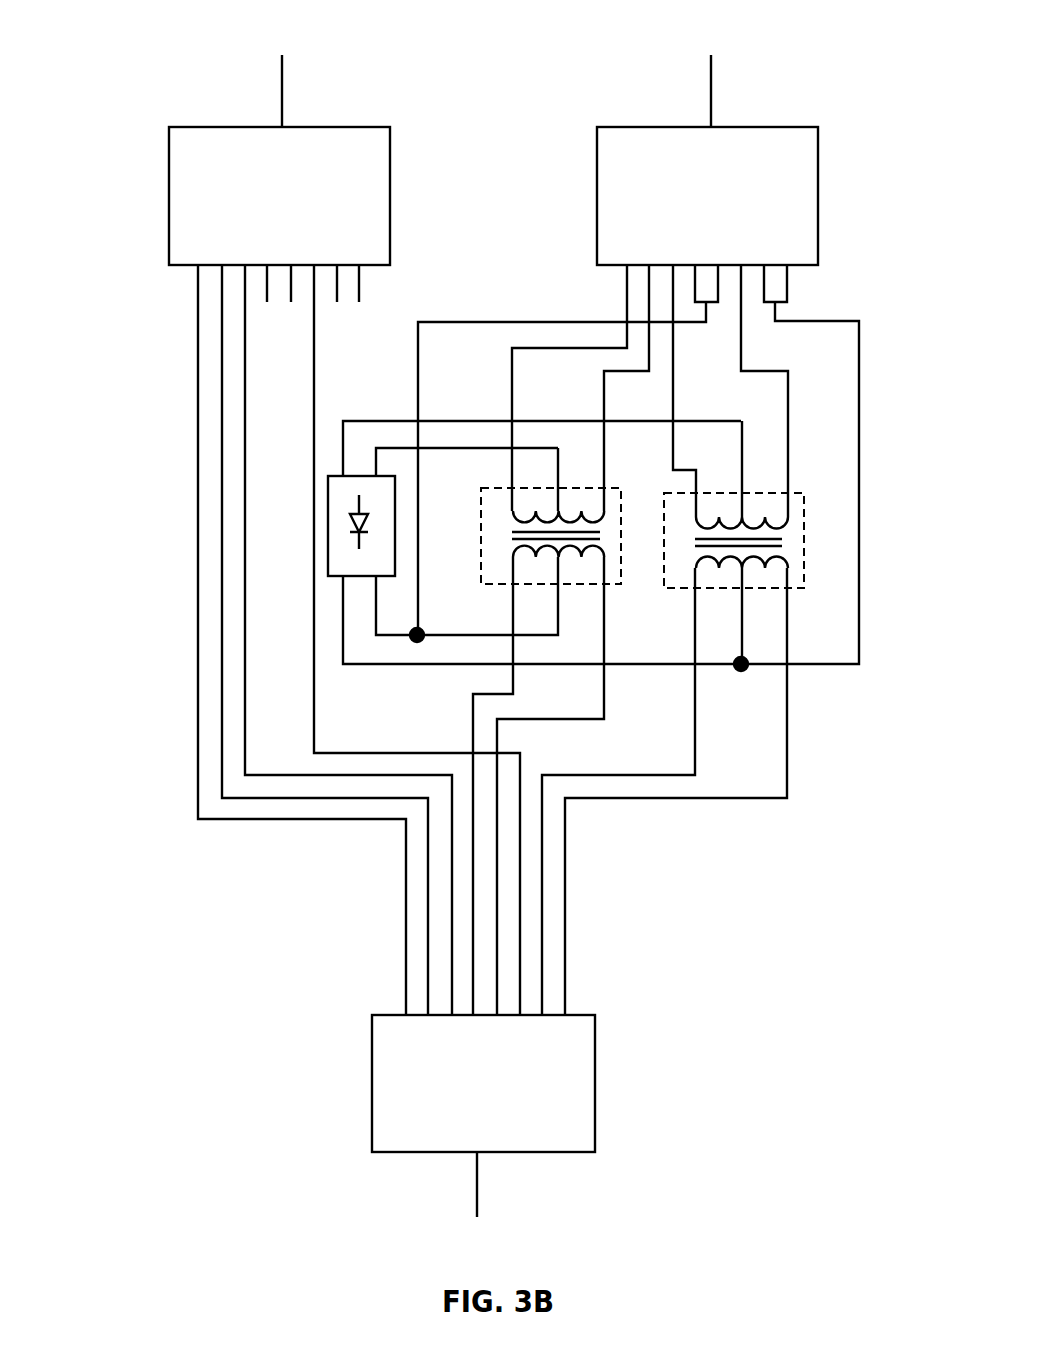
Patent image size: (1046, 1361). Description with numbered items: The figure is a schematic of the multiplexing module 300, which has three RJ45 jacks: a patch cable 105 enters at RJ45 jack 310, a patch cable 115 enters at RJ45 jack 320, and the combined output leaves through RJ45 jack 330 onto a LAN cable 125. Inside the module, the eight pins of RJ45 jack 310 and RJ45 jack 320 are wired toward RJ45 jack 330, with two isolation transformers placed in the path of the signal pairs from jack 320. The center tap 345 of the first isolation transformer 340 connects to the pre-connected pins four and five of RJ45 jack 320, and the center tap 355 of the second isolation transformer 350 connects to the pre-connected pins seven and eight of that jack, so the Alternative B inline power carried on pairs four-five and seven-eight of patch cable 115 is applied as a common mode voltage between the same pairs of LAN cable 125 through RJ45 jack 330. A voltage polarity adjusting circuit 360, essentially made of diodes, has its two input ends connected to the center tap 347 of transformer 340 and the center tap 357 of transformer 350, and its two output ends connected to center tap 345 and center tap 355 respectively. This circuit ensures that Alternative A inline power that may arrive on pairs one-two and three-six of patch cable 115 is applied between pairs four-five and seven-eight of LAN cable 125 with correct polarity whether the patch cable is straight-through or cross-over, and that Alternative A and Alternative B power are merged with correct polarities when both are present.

The patch cable 105 is at (277, 98).
The patch cable 115 is at (705, 103).
The LAN cable 125 is at (470, 1173).
The multiplexing module 300 is at (132, 238).
The RJ45 jack 310 is at (393, 243).
The RJ45 jack 320 is at (592, 242).
The RJ45 jack 330 is at (368, 1073).
The first isolation transformer 340 is at (478, 568).
The center tap 345 is at (558, 594).
The center tap 347 is at (558, 473).
The second isolation transformer 350 is at (664, 530).
The center tap 355 is at (742, 602).
The center tap 357 is at (736, 468).
The voltage polarity adjusting circuit 360 is at (328, 520).